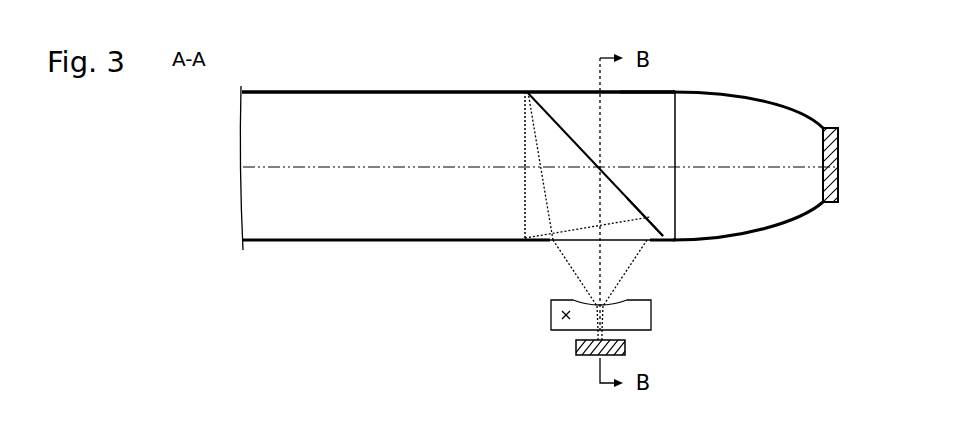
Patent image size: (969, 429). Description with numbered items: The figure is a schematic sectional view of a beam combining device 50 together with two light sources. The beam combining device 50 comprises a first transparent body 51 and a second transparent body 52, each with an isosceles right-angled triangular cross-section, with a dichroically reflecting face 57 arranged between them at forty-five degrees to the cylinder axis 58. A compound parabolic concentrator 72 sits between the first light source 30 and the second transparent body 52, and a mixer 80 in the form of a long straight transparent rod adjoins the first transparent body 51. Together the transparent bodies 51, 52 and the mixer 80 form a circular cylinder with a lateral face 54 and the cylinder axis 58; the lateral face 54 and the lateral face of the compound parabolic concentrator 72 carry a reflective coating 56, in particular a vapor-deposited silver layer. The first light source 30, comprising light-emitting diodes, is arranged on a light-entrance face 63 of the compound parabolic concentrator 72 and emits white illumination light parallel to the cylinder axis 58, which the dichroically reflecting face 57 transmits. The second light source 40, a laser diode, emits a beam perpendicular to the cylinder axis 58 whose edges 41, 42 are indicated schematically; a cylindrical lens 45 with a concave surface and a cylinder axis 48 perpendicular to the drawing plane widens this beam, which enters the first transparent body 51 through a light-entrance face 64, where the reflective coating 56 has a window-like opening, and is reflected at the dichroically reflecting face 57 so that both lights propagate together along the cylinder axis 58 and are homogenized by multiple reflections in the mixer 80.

The first light source 30 is at (832, 202).
The second light source 40 is at (626, 347).
The edge of the light beam 41 is at (577, 273).
The edge of the light beam 42 is at (627, 273).
The cylindrical lens 45 is at (648, 322).
The cylinder axis of the cylindrical lens 48 is at (567, 320).
The beam combining device 50 is at (542, 220).
The first transparent body 51 is at (535, 218).
The second transparent body 52 is at (555, 95).
The lateral face 54 is at (653, 88).
The reflective coating 56 is at (484, 95).
The dichroically reflecting face 57 is at (663, 234).
The cylinder axis 58 is at (423, 167).
The light-entrance face 63 is at (822, 147).
The light-entrance face 64 is at (590, 242).
The compound parabolic concentrator 72 is at (755, 105).
The mixer 80 is at (416, 95).